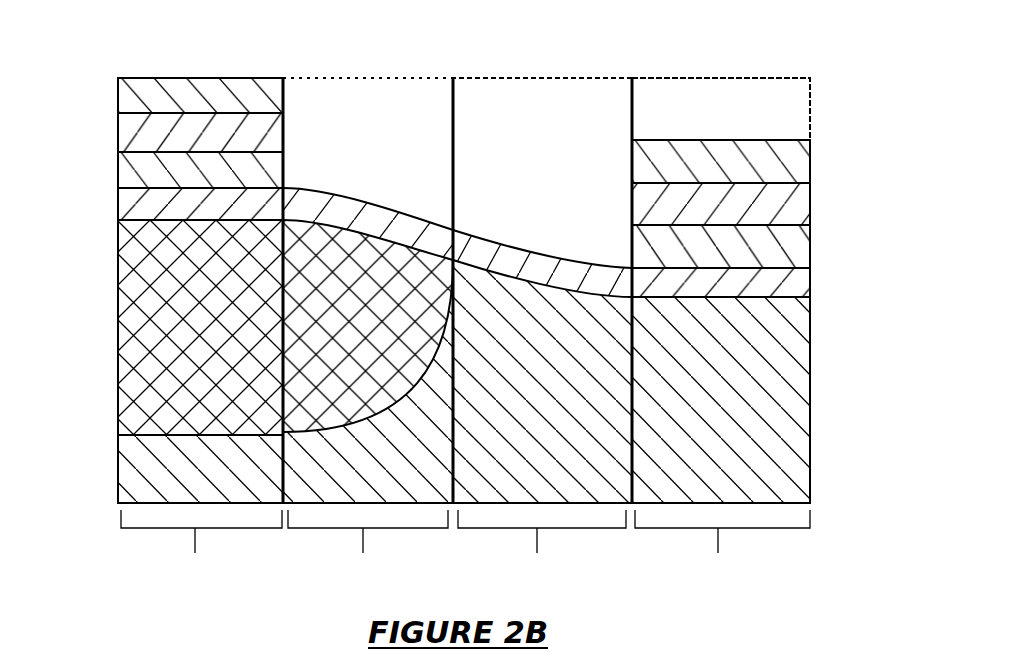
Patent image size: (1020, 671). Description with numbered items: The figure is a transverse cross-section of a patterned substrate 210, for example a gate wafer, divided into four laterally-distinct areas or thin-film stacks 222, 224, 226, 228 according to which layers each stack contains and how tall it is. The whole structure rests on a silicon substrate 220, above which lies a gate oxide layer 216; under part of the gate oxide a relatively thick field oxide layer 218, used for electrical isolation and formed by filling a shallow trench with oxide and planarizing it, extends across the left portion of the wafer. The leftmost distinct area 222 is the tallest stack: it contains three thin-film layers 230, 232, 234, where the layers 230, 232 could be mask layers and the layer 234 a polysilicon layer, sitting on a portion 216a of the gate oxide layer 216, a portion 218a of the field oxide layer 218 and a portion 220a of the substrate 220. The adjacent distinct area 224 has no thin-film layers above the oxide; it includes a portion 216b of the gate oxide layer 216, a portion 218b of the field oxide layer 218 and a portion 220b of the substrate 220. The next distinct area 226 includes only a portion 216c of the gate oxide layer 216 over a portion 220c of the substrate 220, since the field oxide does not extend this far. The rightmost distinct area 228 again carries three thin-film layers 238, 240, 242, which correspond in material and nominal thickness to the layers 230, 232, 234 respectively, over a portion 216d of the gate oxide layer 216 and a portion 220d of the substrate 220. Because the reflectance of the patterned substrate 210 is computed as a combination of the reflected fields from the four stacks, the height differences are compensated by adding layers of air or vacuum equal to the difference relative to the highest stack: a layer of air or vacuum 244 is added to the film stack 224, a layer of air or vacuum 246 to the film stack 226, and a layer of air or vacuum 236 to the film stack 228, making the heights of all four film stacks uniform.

The patterned substrate 210 is at (523, 67).
The gate oxide layer 216 is at (467, 231).
The portion of the gate oxide layer 216a is at (128, 203).
The portion of the gate oxide layer 216b is at (358, 207).
The portion of the gate oxide layer 216c is at (541, 266).
The portion of the gate oxide layer 216d is at (803, 280).
The field oxide layer 218 is at (245, 327).
The portion of the field oxide layer 218a is at (200, 327).
The portion of the field oxide layer 218b is at (368, 326).
The silicon substrate 220 is at (433, 396).
The portion of the substrate 220a is at (200, 469).
The portion of the substrate 220b is at (368, 381).
The portion of the substrate 220c is at (542, 381).
The portion of the substrate 220d is at (721, 400).
The distinct area 222 is at (201, 546).
The distinct area 224 is at (368, 546).
The distinct area 226 is at (542, 548).
The distinct area 228 is at (722, 547).
The thin-film layer 230 is at (125, 98).
The thin-film layer 232 is at (125, 137).
The thin-film layer 234 is at (127, 170).
The layer of air or vacuum 236 is at (700, 119).
The thin-film layer 238 is at (803, 157).
The thin-film layer 240 is at (803, 198).
The thin-film layer 242 is at (803, 242).
The layer of air or vacuum 244 is at (338, 125).
The layer of air or vacuum 246 is at (522, 125).